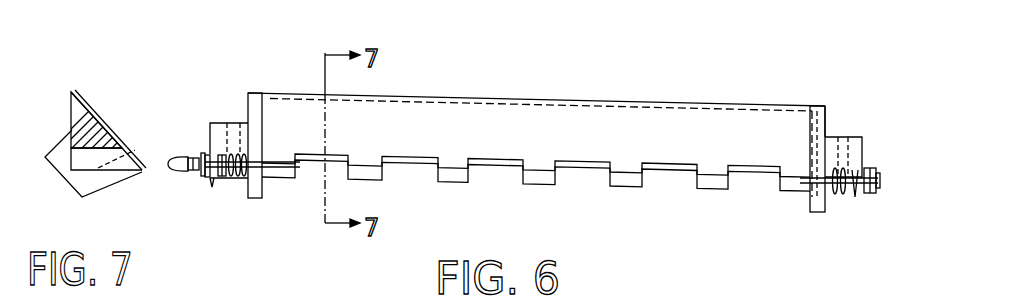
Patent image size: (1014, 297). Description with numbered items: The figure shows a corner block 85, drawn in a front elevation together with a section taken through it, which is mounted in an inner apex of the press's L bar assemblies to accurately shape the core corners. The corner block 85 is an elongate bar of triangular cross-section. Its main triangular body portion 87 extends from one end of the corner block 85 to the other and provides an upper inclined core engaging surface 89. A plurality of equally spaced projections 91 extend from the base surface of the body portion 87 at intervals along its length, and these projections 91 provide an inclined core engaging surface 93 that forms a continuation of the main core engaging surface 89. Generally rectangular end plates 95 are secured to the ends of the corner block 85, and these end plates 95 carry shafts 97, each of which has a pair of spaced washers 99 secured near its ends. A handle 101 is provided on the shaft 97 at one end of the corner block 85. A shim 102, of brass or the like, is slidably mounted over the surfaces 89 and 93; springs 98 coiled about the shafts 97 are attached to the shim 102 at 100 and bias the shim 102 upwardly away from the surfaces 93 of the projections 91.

In FIG. 6, the corner block 85 is at (600, 68).
In FIG. 7, the corner block 85 is at (131, 118).
In FIG. 6, the main triangular body portion 87 is at (380, 95).
In FIG. 7, the main triangular body portion 87 is at (71, 92).
In FIG. 7, the upper inclined core engaging surface 89 is at (130, 132).
In FIG. 6, the projections 91 is at (610, 191).
In FIG. 7, the projections 91 is at (126, 164).
In FIG. 7, the inclined core engaging surface 93 is at (143, 164).
In FIG. 6, the end plates 95 is at (255, 198).
In FIG. 7, the end plates 95 is at (56, 157).
In FIG. 6, the shafts 97 is at (237, 175).
In FIG. 6, the springs 98 is at (222, 174).
In FIG. 6, the washers 99 is at (212, 180).
In FIG. 6, the shim attachment point 100 is at (228, 122).
In FIG. 6, the handle 101 is at (170, 156).
In FIG. 6, the shim 102 is at (465, 125).
In FIG. 7, the shim 102 is at (78, 102).